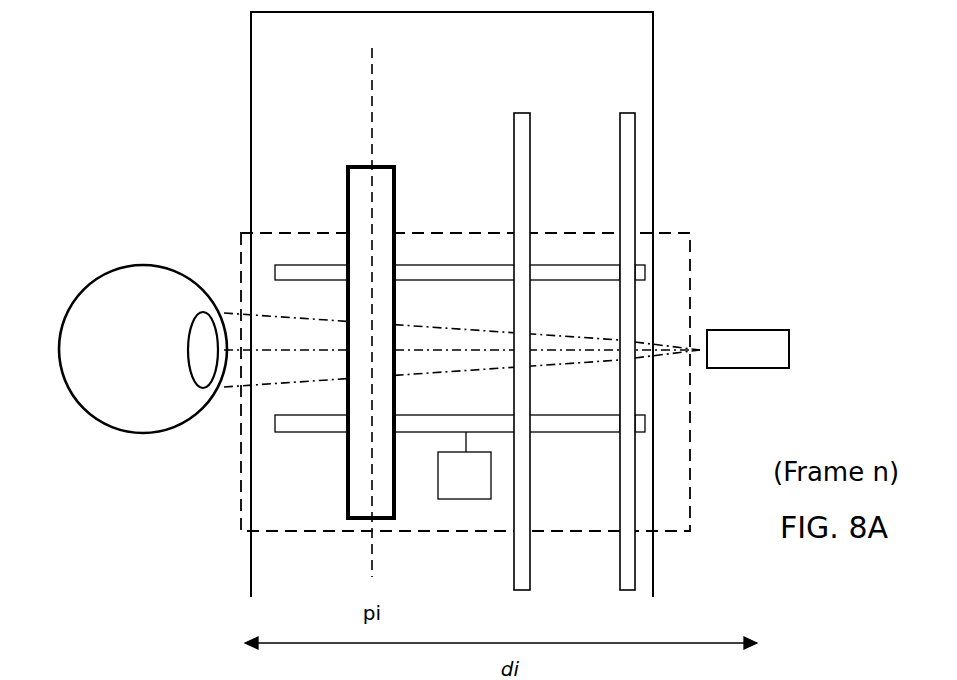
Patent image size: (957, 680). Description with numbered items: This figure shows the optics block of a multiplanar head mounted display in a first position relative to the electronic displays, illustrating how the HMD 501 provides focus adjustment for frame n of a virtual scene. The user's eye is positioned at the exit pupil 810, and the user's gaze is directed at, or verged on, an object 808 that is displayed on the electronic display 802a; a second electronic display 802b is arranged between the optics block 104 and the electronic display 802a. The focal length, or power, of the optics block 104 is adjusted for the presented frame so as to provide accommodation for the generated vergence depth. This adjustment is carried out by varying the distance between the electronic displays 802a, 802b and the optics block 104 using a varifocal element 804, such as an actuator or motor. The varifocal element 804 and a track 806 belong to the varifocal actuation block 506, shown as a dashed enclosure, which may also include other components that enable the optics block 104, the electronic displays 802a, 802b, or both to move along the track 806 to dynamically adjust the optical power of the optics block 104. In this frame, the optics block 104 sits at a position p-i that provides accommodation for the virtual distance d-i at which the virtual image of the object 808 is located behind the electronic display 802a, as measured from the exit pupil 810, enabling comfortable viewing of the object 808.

The optics block 104 is at (368, 185).
The HMD 501 is at (653, 43).
The varifocal actuation block 506 is at (240, 263).
The electronic display 802a is at (630, 145).
The electronic display 802b is at (518, 116).
The varifocal element 804 is at (465, 478).
The track 806 is at (596, 431).
The object 808 is at (779, 330).
The exit pupil 810 is at (70, 308).